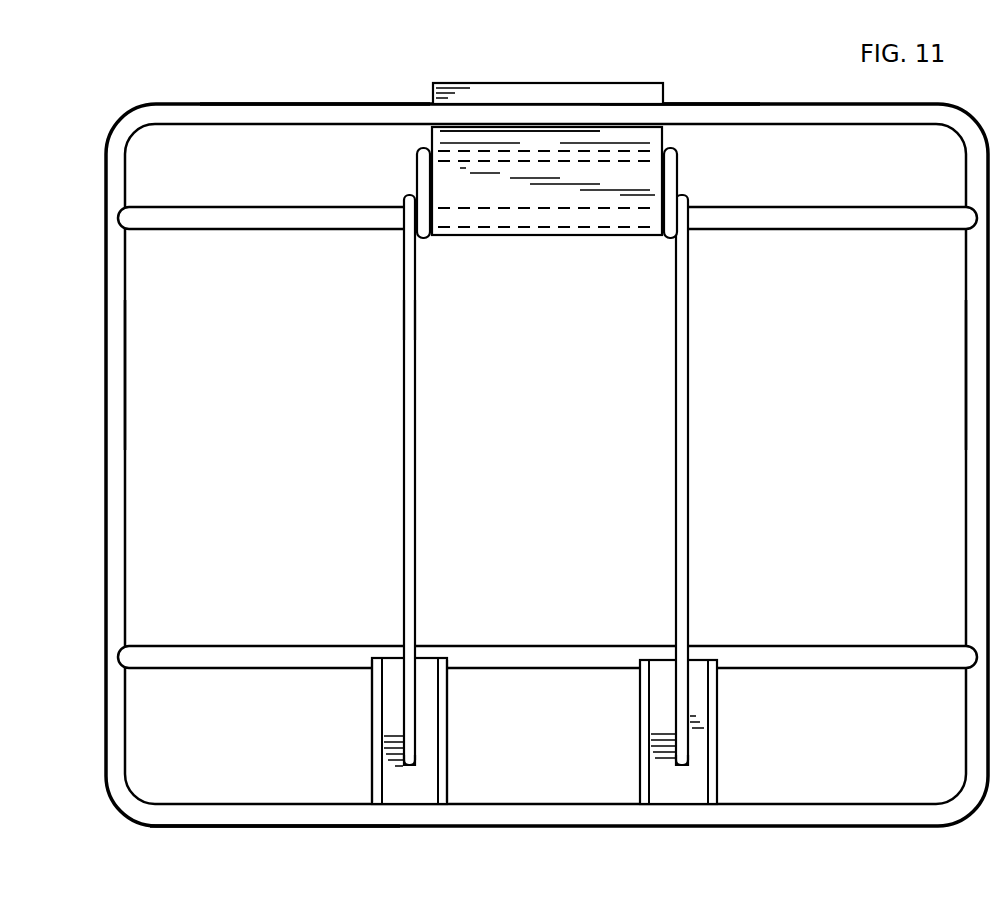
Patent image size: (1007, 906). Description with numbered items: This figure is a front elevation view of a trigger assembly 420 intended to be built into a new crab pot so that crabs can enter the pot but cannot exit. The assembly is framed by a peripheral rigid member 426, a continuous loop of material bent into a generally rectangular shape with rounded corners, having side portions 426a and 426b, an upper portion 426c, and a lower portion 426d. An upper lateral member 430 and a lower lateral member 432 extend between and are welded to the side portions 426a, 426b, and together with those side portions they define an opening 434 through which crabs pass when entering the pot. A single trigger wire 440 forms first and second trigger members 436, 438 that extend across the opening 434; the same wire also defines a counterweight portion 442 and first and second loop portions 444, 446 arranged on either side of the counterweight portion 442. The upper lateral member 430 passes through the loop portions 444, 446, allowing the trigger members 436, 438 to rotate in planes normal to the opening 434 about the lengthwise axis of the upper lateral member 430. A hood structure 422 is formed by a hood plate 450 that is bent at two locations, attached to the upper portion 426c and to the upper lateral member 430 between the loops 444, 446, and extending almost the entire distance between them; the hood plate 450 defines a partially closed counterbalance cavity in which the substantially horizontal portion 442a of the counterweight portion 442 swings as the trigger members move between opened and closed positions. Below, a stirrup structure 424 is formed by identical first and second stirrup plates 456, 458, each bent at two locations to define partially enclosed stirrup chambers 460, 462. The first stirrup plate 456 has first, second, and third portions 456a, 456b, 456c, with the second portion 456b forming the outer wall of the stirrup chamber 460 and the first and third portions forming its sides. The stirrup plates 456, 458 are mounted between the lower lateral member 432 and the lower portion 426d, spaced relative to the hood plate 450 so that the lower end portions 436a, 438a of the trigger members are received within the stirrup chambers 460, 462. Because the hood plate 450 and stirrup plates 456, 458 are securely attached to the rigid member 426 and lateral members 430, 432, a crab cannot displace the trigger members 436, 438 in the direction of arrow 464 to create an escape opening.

The trigger assembly 420 is at (764, 90).
The hood structure 422 is at (640, 78).
The stirrup structure 424 is at (732, 717).
The rigid member 426 is at (117, 340).
The side portion 426a is at (118, 374).
The side portion 426b is at (966, 356).
The upper portion 426c is at (247, 112).
The lower portion 426d is at (200, 812).
The upper lateral member 430 is at (236, 216).
The lower lateral member 432 is at (226, 656).
The opening 434 is at (722, 413).
The first trigger member 436 is at (406, 356).
The lower end portion 436a is at (404, 757).
The second trigger member 438 is at (689, 364).
The lower end portion 438a is at (676, 754).
The trigger wire 440 is at (406, 326).
The counterweight portion 442 is at (416, 150).
The substantially horizontal portion 442a is at (605, 147).
The first loop portion 444 is at (403, 237).
The second loop portion 446 is at (696, 243).
The hood plate 450 is at (503, 90).
The first stirrup plate 456 is at (384, 705).
The first portion 456a is at (372, 684).
The second portion 456b is at (447, 680).
The third portion 456c is at (440, 706).
The second stirrup plate 458 is at (703, 742).
The first stirrup chamber 460 is at (446, 736).
The second stirrup chamber 462 is at (694, 774).
The arrow 464 is at (760, 544).